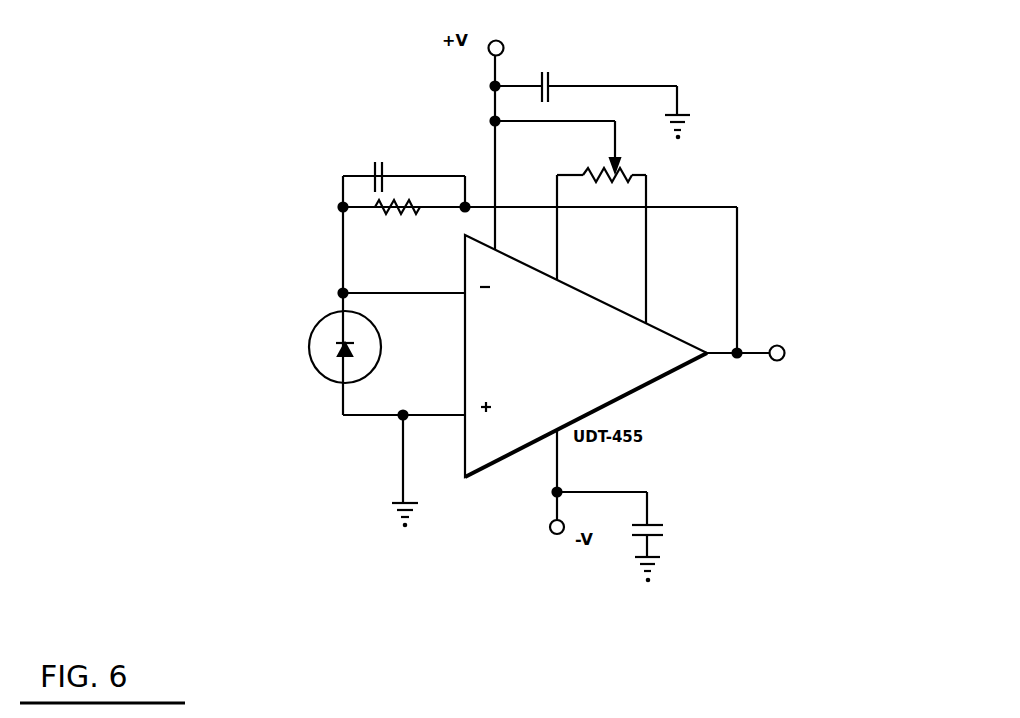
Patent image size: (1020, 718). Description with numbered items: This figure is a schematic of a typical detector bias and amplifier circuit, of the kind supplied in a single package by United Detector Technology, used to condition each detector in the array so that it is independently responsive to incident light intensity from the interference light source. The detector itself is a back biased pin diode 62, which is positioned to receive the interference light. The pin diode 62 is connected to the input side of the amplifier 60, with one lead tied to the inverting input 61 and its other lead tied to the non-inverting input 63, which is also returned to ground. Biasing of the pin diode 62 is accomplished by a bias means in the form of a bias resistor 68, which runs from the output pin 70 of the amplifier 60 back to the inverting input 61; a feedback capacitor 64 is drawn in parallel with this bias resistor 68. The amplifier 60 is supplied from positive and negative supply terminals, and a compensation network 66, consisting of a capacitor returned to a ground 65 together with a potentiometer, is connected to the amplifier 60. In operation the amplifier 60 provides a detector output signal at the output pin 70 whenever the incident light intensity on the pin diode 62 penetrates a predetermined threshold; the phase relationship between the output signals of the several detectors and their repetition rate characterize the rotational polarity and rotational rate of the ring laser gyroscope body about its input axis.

The operational amplifier 60 is at (571, 360).
The inverting input 61 is at (499, 300).
The back biased pin diode 62 is at (352, 372).
The non-inverting input 63 is at (500, 413).
The feedback capacitor C10 64 is at (385, 170).
The ground 65 is at (679, 111).
The compensation network (C12, R12) 66 is at (552, 80).
The feedback resistor R10 68 is at (390, 210).
The output pin 70 is at (776, 361).